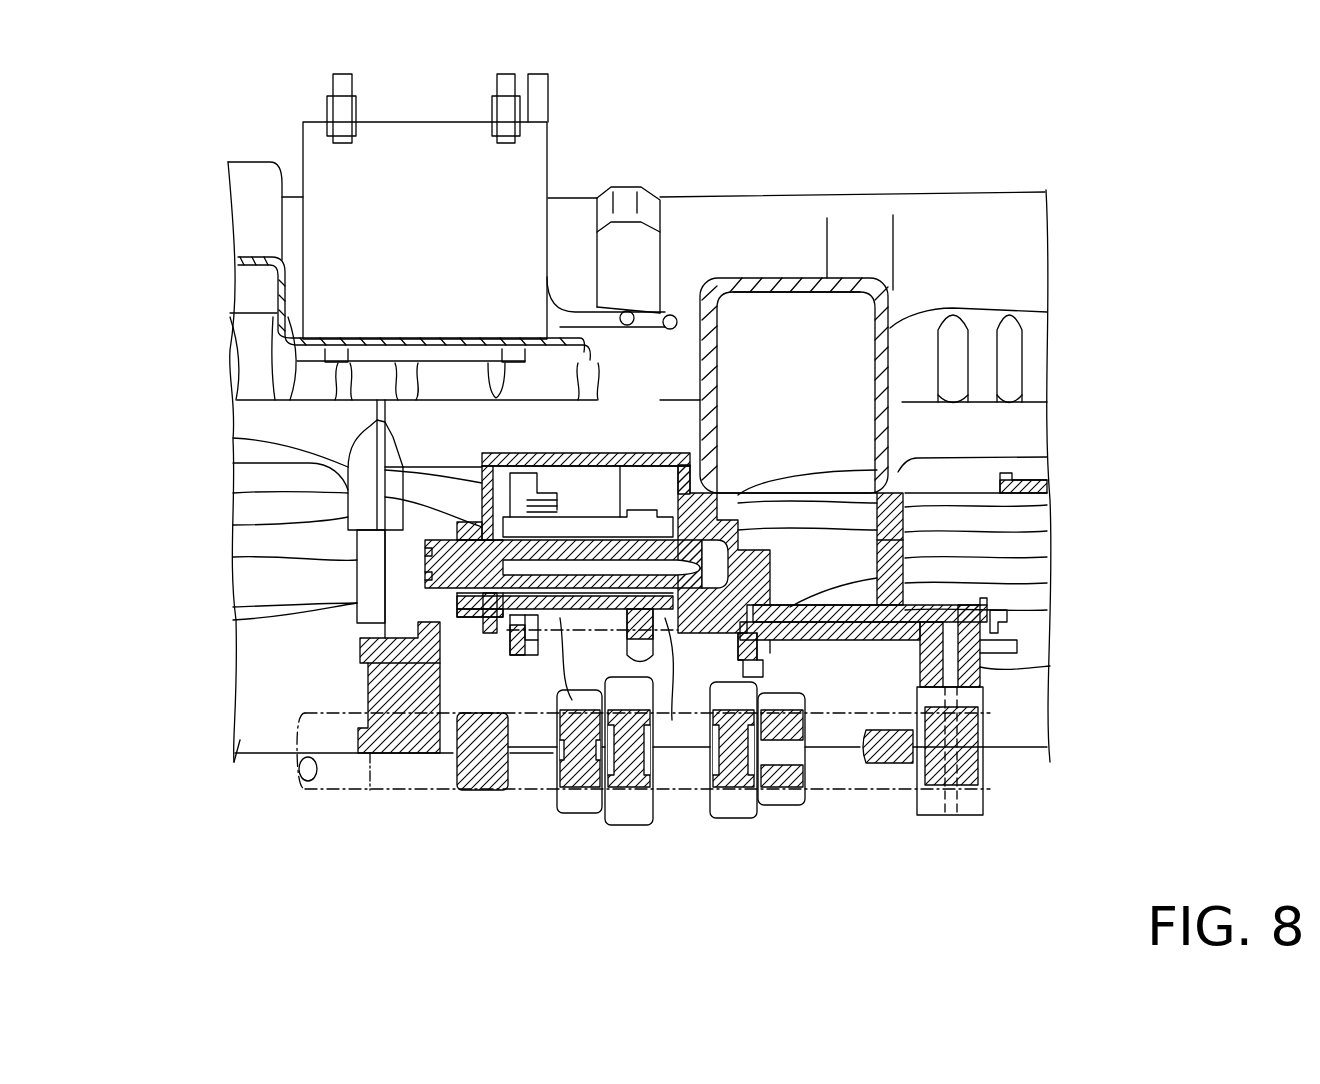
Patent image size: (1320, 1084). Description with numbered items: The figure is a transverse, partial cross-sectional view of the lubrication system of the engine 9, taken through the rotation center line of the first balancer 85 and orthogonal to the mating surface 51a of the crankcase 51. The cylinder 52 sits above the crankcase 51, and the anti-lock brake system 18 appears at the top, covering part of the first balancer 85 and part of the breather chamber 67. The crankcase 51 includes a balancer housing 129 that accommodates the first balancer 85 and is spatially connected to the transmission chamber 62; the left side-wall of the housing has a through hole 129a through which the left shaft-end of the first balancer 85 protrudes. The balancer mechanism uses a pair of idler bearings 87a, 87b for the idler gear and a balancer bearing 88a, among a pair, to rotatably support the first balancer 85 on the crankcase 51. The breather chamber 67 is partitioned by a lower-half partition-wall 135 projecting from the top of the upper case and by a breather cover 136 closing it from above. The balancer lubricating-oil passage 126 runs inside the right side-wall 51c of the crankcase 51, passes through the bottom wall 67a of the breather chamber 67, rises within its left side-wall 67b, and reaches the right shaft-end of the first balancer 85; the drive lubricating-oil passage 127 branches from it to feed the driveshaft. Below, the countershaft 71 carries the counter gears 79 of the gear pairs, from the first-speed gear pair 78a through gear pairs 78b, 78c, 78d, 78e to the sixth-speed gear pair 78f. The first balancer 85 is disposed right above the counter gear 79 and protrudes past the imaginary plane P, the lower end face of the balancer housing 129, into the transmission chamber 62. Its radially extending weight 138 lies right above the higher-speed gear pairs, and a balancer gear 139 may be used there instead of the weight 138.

The engine 9 is at (930, 127).
The anti-lock brake system 18 is at (422, 122).
The crankcase 51 is at (407, 753).
The mating surface 51a is at (252, 757).
The right side-wall 51c is at (985, 662).
The cylinder 52 is at (977, 192).
The transmission chamber 62 is at (840, 725).
The breather chamber 67 is at (748, 270).
The bottom wall 67a is at (820, 600).
The left side-wall 67b is at (905, 540).
The countershaft 71 is at (337, 793).
The first-speed gear pair 78a is at (883, 765).
The gear pair 78b is at (480, 793).
The gear pair 78c is at (775, 807).
The gear pair 78d is at (583, 815).
The gear pair 78e is at (728, 820).
The sixth-speed gear pair 78f is at (627, 827).
The counter gear 79 is at (463, 795).
The first balancer 85 is at (618, 513).
The idler bearing 87a is at (355, 565).
The idler bearing 87b is at (745, 512).
The balancer bearing 88a is at (465, 528).
The balancer lubricating-oil passage 126 is at (885, 632).
The drive lubricating-oil passage 127 is at (945, 815).
The balancer housing 129 is at (460, 520).
The through hole 129a is at (410, 610).
The lower-half partition-wall 135 is at (850, 572).
The breather cover 136 is at (805, 278).
The weight 138 is at (652, 662).
The balancer gear 139 is at (522, 655).
The imaginary plane P is at (593, 630).